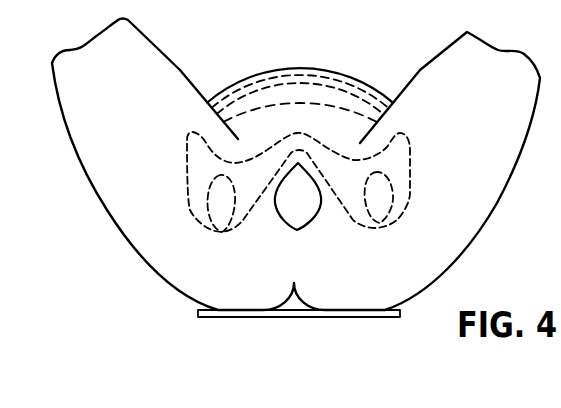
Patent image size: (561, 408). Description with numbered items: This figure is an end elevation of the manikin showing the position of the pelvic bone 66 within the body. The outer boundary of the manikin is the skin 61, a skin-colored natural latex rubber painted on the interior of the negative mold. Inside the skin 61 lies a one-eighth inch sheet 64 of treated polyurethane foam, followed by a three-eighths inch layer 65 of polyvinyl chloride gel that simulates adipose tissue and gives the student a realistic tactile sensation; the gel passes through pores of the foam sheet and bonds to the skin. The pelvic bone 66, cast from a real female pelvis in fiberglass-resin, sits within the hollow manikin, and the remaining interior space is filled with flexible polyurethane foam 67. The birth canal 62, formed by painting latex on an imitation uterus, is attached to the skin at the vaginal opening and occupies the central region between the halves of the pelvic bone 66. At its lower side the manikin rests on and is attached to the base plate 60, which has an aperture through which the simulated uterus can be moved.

The base plate 60 is at (270, 316).
The skin 61 is at (244, 79).
The birth canal 62 is at (298, 207).
The sheet of polyurethane foam 64 is at (274, 77).
The layer of polyvinyl chloride gel 65 is at (314, 83).
The pelvic bone 66 is at (235, 220).
The flexible polyurethane foam 67 is at (343, 108).